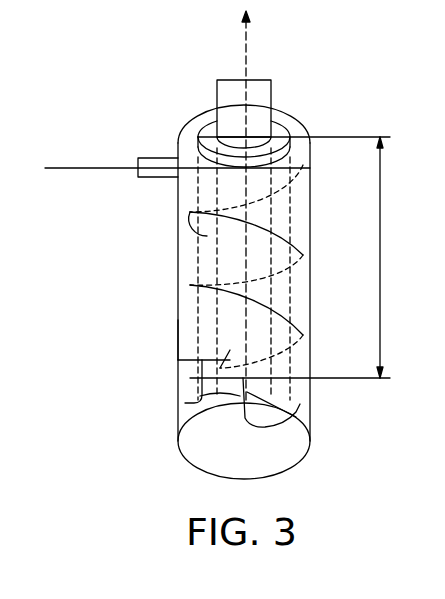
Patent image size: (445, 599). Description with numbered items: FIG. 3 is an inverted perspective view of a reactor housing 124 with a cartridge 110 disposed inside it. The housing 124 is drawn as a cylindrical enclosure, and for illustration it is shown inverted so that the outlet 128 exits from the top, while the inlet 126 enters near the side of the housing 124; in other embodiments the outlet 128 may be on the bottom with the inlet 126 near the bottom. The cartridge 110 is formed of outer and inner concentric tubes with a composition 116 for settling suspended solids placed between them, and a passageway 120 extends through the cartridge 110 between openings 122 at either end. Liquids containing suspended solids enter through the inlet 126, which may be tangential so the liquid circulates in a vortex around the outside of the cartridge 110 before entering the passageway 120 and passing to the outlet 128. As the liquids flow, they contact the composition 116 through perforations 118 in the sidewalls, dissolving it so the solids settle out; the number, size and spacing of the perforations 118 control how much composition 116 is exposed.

The cartridge 110 is at (310, 289).
The composition 116 is at (207, 233).
The perforations 118 is at (215, 323).
The passageway 120 is at (190, 360).
The openings 122 is at (198, 400).
The reactor housing 124 is at (177, 340).
The inlet 126 is at (138, 178).
The outlet 128 is at (262, 80).